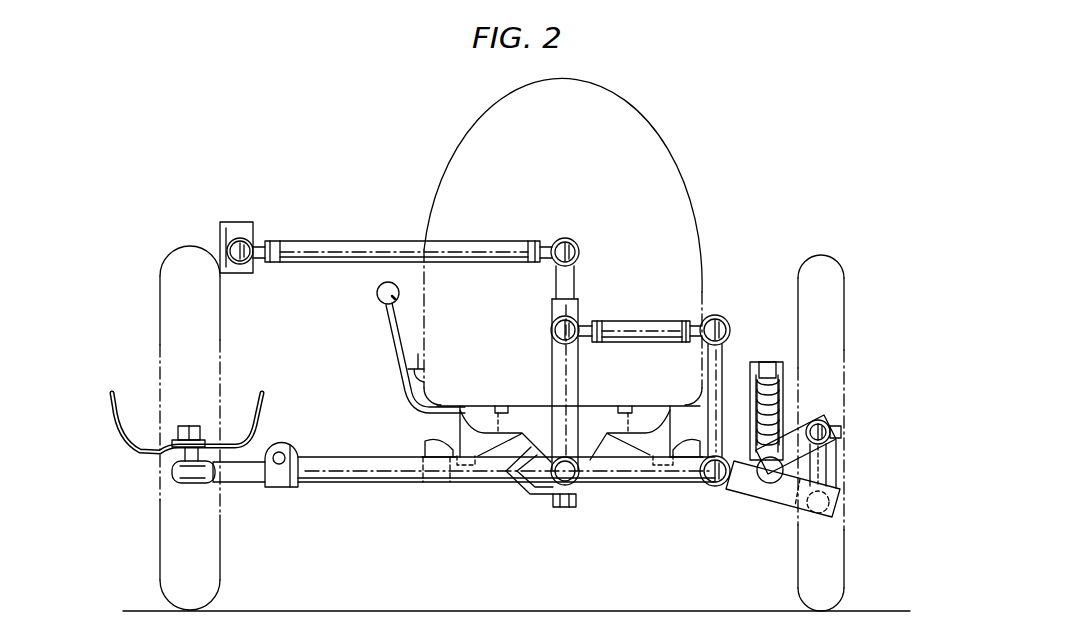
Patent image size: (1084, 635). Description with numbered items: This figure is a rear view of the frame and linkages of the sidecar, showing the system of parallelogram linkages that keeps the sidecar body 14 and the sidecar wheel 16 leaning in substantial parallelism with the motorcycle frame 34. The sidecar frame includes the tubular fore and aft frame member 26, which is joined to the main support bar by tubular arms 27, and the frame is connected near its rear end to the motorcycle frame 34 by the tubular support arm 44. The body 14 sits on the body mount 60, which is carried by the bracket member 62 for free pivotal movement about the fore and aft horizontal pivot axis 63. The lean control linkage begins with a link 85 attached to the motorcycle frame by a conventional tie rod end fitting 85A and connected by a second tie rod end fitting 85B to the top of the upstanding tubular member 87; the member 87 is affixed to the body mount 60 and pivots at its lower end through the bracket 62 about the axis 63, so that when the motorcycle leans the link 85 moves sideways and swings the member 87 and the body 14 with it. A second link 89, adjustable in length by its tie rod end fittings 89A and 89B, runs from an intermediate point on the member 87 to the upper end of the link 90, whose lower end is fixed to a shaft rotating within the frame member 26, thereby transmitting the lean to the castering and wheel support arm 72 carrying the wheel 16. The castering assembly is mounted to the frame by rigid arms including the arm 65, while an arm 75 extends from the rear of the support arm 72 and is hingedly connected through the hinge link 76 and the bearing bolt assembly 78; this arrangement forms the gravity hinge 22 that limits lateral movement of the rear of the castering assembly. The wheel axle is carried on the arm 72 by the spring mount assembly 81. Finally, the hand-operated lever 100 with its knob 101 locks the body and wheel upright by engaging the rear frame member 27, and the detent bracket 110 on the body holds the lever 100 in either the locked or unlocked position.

The sidecar body 14 is at (684, 172).
The sidecar wheel 16 is at (852, 301).
The gravity hinge 22 is at (845, 455).
The fore and aft frame member 26 is at (698, 470).
The tubular arms 27 is at (647, 480).
The motorcycle frame 34 is at (108, 402).
The tubular support arm 44 is at (375, 484).
The body mount 60 is at (490, 423).
The bracket member 62 is at (533, 475).
The pivot axis 63 is at (578, 482).
The rigid arm 65 is at (740, 484).
The castering and wheel support arm 72 is at (757, 493).
The arm 75 is at (789, 432).
The hinge link 76 is at (828, 470).
The bearing bolt assembly 78 is at (829, 421).
The spring mount assembly 81 is at (774, 347).
The link 85 is at (357, 242).
The tie rod end fitting 85A is at (258, 239).
The tie rod end fitting 85B is at (570, 242).
The upstanding tubular member 87 is at (551, 376).
The link 89 is at (644, 321).
The tie rod end fitting 89A is at (550, 330).
The tie rod end fitting 89B is at (726, 318).
The link 90 is at (724, 362).
The hand-operated lever 100 is at (392, 351).
The knob 101 is at (377, 292).
The detent bracket 110 is at (410, 388).